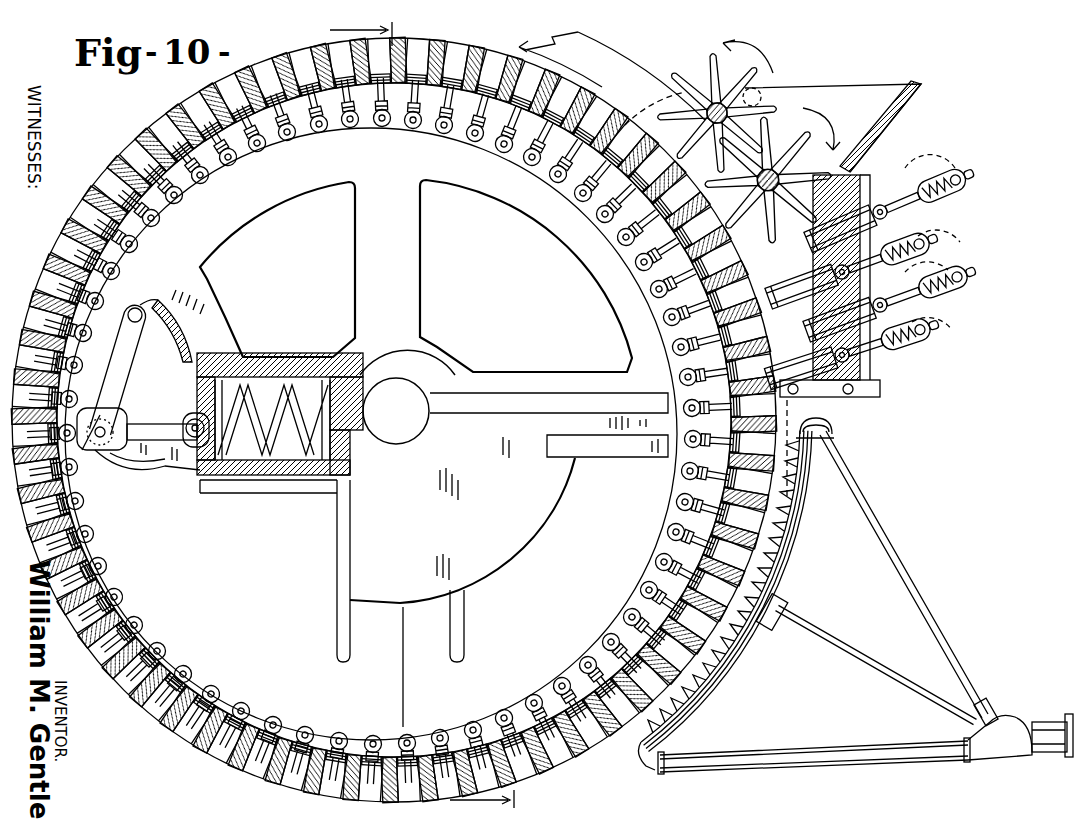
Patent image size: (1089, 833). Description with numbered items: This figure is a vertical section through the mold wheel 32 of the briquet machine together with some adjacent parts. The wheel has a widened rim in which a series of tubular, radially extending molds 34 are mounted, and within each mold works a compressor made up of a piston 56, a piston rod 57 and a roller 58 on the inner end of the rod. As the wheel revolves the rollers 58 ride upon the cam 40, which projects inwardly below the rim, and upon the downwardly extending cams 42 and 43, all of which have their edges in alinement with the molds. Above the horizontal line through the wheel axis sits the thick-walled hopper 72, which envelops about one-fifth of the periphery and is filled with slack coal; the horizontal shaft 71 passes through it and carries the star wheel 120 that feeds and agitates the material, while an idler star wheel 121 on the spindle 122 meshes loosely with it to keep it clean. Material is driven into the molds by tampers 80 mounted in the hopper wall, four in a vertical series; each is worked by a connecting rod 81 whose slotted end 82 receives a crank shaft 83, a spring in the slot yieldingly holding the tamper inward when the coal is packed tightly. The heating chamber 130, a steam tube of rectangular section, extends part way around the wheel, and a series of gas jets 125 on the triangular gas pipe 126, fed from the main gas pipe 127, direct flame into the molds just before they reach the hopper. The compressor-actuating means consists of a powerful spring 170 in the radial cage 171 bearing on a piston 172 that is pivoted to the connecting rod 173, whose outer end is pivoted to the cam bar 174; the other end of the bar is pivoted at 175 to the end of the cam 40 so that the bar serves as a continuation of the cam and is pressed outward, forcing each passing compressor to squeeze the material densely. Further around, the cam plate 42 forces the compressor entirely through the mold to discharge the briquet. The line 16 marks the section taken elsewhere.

The section line 16 is at (435, 412).
The mold wheel 32 is at (472, 60).
The molds 34 is at (394, 427).
The cam 40 is at (371, 434).
The cam plate 42 is at (332, 571).
The cam 43 is at (535, 560).
The piston 56 is at (278, 95).
The piston rod 57 is at (380, 431).
The rollers 58 is at (268, 160).
The shaft 71 is at (780, 178).
The hopper 72 is at (833, 290).
The tampers 80 is at (812, 232).
The connecting rods 81 is at (880, 205).
The slotted ends 82 is at (945, 192).
The crank shaft 83 is at (945, 182).
The star wheel 120 is at (770, 169).
The star wheel 121 is at (712, 56).
The spindle 122 is at (722, 92).
The gas jets 125 is at (790, 505).
The triangular gas pipe 126 is at (790, 565).
The main gas pipe 127 is at (1045, 714).
The heating chamber 130 is at (612, 76).
The spring 170 is at (288, 380).
The cage 171 is at (205, 480).
The piston 172 is at (200, 462).
The connecting rod 173 is at (160, 426).
The cam bar 174 is at (110, 412).
The pivot 175 is at (147, 354).